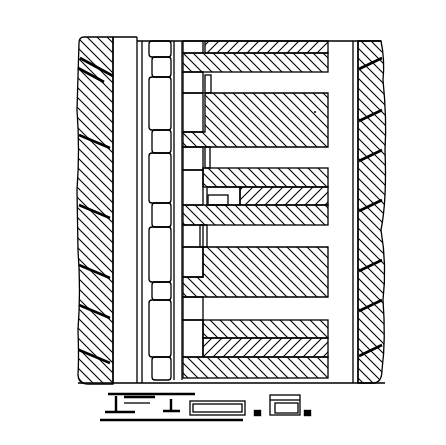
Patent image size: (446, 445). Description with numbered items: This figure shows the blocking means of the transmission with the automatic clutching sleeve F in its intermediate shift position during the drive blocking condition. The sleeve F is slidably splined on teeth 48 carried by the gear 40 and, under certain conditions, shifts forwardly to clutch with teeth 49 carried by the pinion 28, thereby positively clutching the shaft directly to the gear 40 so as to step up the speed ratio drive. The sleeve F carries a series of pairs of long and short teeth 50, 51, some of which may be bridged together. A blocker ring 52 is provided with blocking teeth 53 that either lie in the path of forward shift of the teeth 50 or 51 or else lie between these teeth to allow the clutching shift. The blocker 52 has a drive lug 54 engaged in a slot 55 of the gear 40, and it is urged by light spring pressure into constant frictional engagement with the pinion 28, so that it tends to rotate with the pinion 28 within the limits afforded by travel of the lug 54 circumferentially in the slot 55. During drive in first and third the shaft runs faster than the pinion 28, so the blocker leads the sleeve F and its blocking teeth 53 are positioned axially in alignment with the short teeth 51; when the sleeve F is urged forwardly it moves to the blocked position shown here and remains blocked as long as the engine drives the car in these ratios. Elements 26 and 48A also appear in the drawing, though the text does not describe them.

The casing tube 26 is at (399, 212).
The pinion 28 is at (90, 123).
The gear 40 is at (366, 136).
The teeth 48 is at (287, 50).
The intermediate plate 48A is at (316, 203).
The teeth 49 is at (160, 143).
The long teeth 50 is at (187, 140).
The short teeth 51 is at (210, 107).
The blocker ring 52 is at (193, 41).
The blocking teeth 53 is at (185, 103).
The drive lug 54 is at (244, 193).
The slot 55 is at (247, 205).
The automatic clutching sleeve F is at (315, 112).